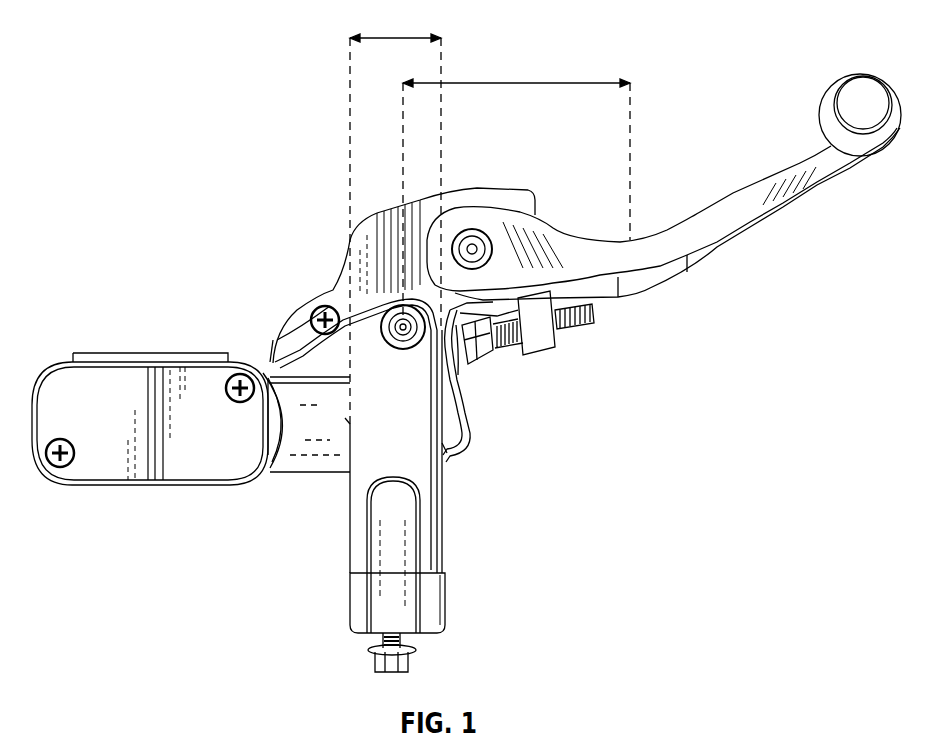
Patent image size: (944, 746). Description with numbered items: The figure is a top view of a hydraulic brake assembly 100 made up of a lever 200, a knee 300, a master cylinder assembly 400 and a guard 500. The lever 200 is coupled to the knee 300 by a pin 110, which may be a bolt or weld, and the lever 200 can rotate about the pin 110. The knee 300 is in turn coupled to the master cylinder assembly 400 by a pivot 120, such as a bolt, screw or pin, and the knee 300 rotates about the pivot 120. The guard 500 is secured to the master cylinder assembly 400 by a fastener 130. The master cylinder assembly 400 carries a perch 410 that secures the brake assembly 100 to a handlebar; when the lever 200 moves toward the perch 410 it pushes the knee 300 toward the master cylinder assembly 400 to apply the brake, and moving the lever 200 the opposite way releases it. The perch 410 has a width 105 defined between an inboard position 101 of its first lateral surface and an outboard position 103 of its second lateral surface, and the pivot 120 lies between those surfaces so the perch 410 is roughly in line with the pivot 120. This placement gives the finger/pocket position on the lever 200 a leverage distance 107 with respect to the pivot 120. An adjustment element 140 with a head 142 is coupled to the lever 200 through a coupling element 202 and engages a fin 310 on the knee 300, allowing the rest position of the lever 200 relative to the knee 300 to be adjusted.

The brake assembly 100 is at (176, 176).
The inboard position 101 is at (350, 117).
The outboard position 103 is at (441, 57).
The width 105 is at (385, 36).
The leverage distance 107 is at (528, 83).
The pin 110 is at (472, 249).
The pivot 120 is at (403, 345).
The fastener 130 is at (328, 306).
The adjustment element 140 is at (583, 322).
The head 142 is at (490, 357).
The lever 200 is at (708, 278).
The coupling element 202 is at (542, 338).
The knee 300 is at (468, 452).
The fin 310 is at (460, 370).
The master cylinder assembly 400 is at (298, 515).
The perch 410 is at (430, 545).
The guard 500 is at (397, 200).